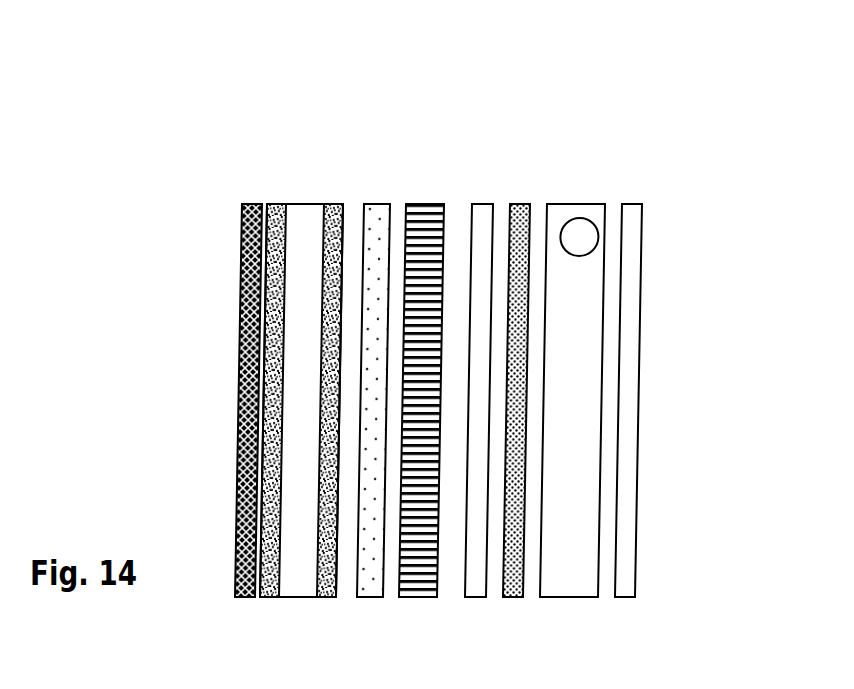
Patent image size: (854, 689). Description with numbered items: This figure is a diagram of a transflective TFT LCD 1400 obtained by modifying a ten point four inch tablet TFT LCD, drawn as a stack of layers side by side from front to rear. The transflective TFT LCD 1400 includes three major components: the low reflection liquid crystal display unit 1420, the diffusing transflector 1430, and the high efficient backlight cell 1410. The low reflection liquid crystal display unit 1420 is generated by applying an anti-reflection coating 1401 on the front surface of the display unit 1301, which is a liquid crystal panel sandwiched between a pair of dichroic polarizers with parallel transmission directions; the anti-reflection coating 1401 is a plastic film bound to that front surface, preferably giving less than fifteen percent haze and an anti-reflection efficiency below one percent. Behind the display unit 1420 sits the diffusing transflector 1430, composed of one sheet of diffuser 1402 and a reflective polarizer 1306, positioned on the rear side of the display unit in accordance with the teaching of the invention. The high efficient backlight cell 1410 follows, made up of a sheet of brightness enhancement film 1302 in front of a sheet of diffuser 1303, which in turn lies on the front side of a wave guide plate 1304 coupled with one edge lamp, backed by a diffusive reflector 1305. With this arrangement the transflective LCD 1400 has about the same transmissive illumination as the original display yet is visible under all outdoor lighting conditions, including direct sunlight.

The transflective TFT LCD 1400 is at (640, 615).
The low reflection liquid crystal display unit 1420 is at (145, 72).
The diffusing transflector 1430 is at (318, 72).
The high efficient backlight cell 1410 is at (727, 74).
The anti-reflection coating 1401 is at (243, 203).
The display unit 1301 is at (297, 204).
The diffuser 1402 is at (368, 204).
The reflective polarizer 1306 is at (430, 204).
The brightness enhancement film 1302 is at (477, 204).
The diffuser 1303 is at (527, 204).
The wave guide plate 1304 is at (582, 204).
The diffusive reflector 1305 is at (643, 207).